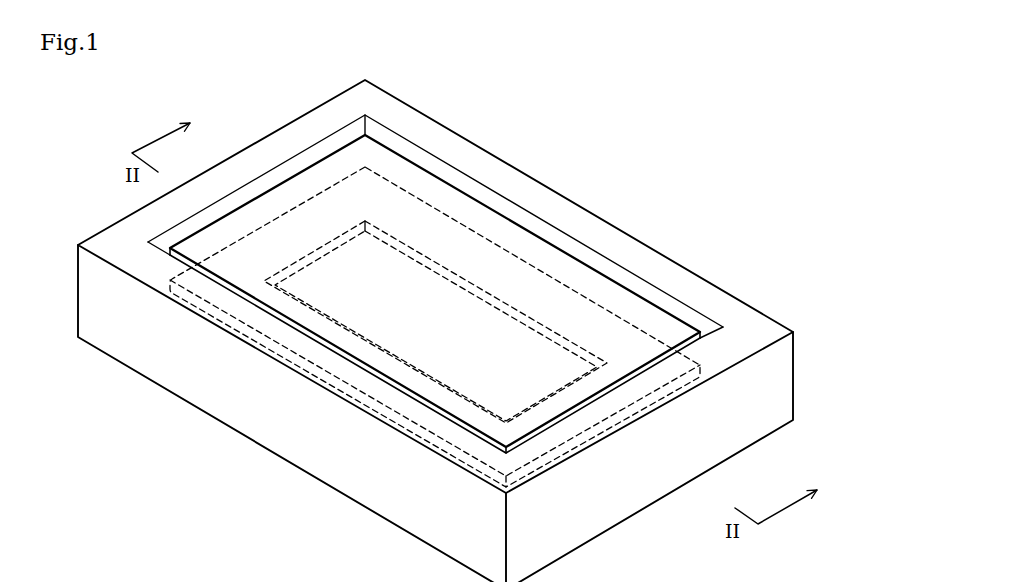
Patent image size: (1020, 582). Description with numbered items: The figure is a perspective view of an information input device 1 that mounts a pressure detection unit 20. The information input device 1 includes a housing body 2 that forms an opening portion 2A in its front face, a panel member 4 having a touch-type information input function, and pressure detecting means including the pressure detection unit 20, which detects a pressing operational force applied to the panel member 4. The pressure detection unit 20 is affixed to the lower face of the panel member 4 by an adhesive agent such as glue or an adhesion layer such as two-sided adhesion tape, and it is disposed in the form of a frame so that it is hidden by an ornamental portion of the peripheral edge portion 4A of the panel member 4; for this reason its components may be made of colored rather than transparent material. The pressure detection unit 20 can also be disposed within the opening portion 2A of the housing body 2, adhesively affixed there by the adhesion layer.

The information input device 1 is at (102, 155).
The housing body 2 is at (518, 175).
The opening portion 2A is at (285, 173).
The panel member 4 is at (423, 185).
The peripheral edge portion 4A is at (203, 248).
The pressure detection unit 20 is at (598, 303).